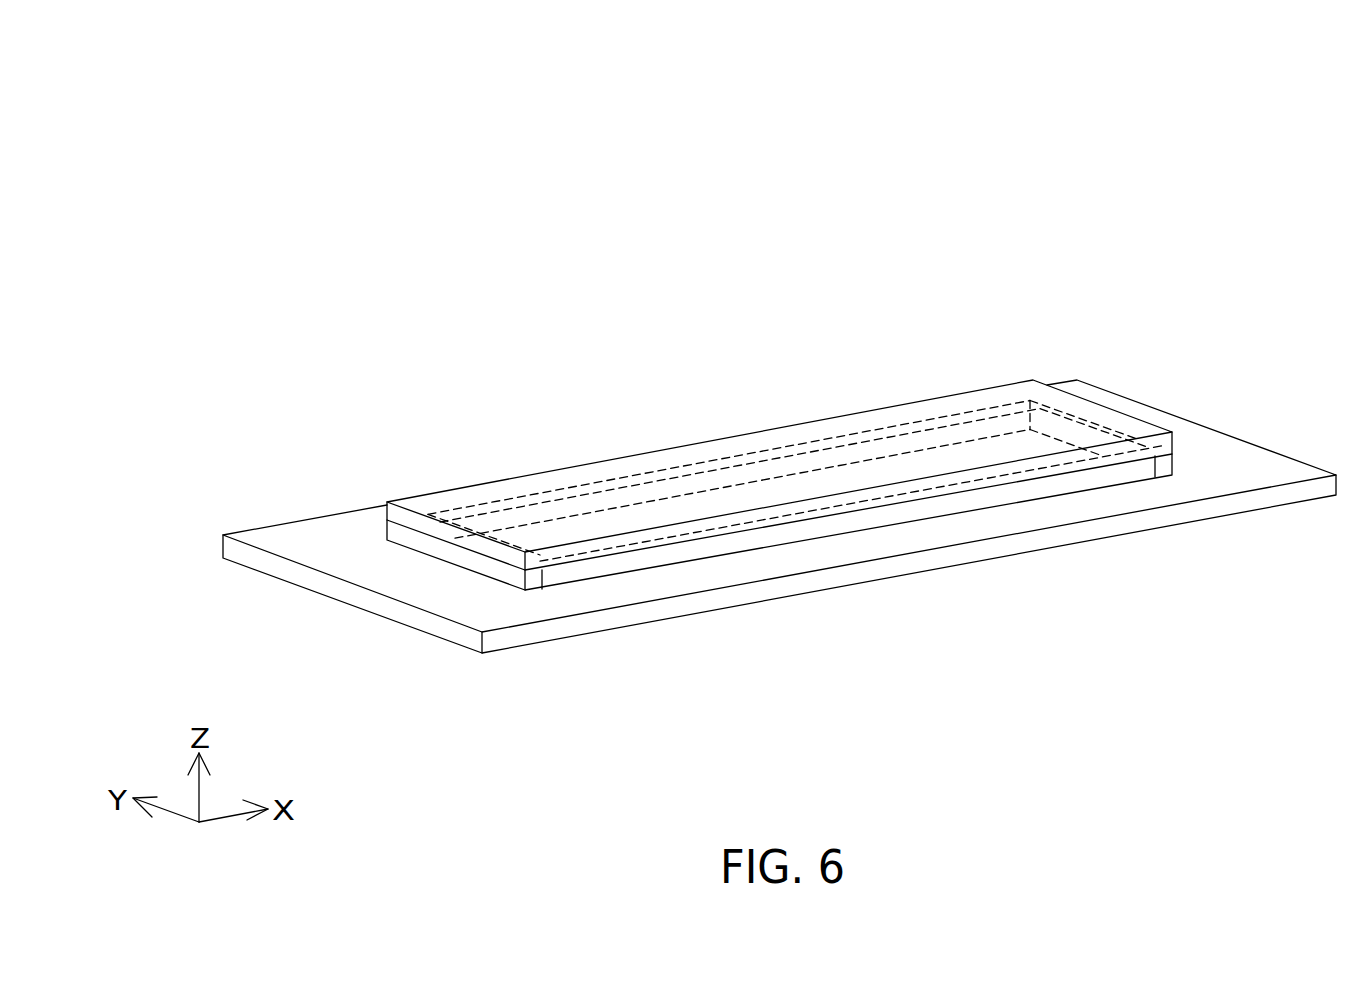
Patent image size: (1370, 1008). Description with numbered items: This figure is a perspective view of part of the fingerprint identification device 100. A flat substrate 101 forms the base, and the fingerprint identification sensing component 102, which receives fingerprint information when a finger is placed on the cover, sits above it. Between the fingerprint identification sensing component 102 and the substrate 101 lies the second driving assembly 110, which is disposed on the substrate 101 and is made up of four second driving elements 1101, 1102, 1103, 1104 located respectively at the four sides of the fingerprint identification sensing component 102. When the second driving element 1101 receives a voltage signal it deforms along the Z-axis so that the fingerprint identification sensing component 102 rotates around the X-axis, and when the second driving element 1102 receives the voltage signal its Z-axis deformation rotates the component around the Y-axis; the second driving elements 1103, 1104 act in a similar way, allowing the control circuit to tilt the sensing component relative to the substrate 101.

The fingerprint identification device 100 is at (165, 67).
The substrate 101 is at (973, 528).
The fingerprint identification sensing component 102 is at (878, 470).
The second driving assembly 110 is at (158, 197).
The second driving element 1101 is at (787, 633).
The second driving element 1102 is at (455, 556).
The second driving element 1103 is at (697, 483).
The second driving element 1104 is at (1197, 360).